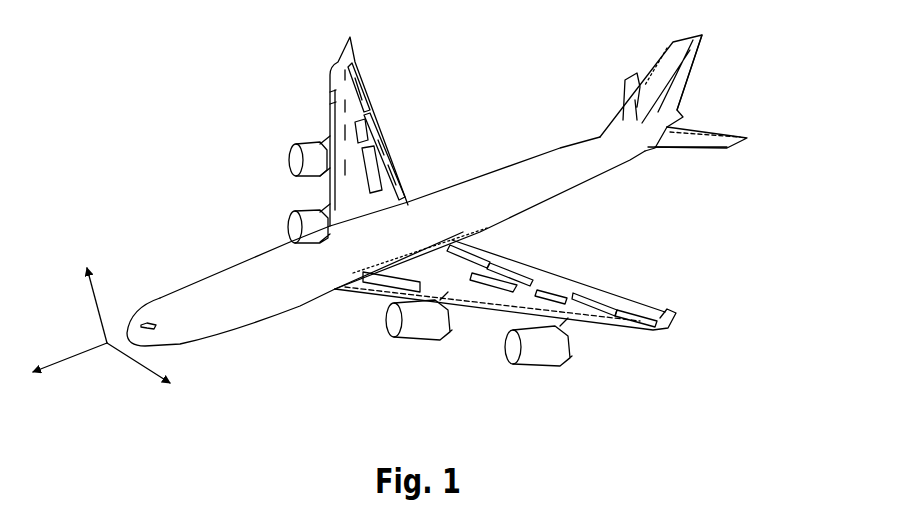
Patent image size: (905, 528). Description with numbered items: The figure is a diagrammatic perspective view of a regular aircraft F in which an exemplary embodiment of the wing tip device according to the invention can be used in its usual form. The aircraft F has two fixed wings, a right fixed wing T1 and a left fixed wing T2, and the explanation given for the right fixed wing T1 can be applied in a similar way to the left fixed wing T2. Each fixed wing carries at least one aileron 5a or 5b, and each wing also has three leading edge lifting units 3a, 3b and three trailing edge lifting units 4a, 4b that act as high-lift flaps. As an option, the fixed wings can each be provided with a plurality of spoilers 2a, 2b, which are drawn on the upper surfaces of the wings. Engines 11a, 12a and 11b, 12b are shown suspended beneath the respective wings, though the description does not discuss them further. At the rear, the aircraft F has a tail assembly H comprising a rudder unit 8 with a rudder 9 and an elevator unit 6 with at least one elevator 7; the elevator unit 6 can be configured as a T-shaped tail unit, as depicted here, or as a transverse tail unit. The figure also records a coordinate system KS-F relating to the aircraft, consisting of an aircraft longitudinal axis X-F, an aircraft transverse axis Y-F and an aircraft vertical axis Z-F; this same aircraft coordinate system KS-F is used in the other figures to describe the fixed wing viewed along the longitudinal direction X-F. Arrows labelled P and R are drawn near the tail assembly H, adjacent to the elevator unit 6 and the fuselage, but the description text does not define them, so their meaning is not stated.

The aircraft F is at (222, 210).
The coordinate system KS-F is at (55, 283).
The aircraft longitudinal axis X-F is at (70, 370).
The aircraft transverse axis Y-F is at (138, 370).
The aircraft vertical axis Z-F is at (107, 302).
The right fixed wing T1 is at (333, 72).
The left fixed wing T2 is at (617, 318).
The spoilers 2a is at (402, 162).
The spoilers 2b is at (468, 252).
The leading edge lifting units 3a is at (330, 98).
The leading edge lifting units 3b is at (525, 307).
The trailing edge lifting units 4a is at (382, 130).
The trailing edge lifting units 4b is at (557, 297).
The aileron 5a is at (362, 70).
The aileron 5b is at (607, 297).
The inner engine of first wing 11a is at (370, 173).
The inner engine of second wing 11b is at (452, 300).
The outer engine of first wing 12a is at (330, 130).
The outer engine of second wing 12b is at (507, 320).
The elevator unit 6 is at (690, 142).
The elevator 7 is at (717, 127).
The rudder unit 8 is at (672, 47).
The rudder 9 is at (700, 52).
The tail assembly H is at (700, 97).
The pitch axis P is at (645, 160).
The roll axis R is at (623, 208).